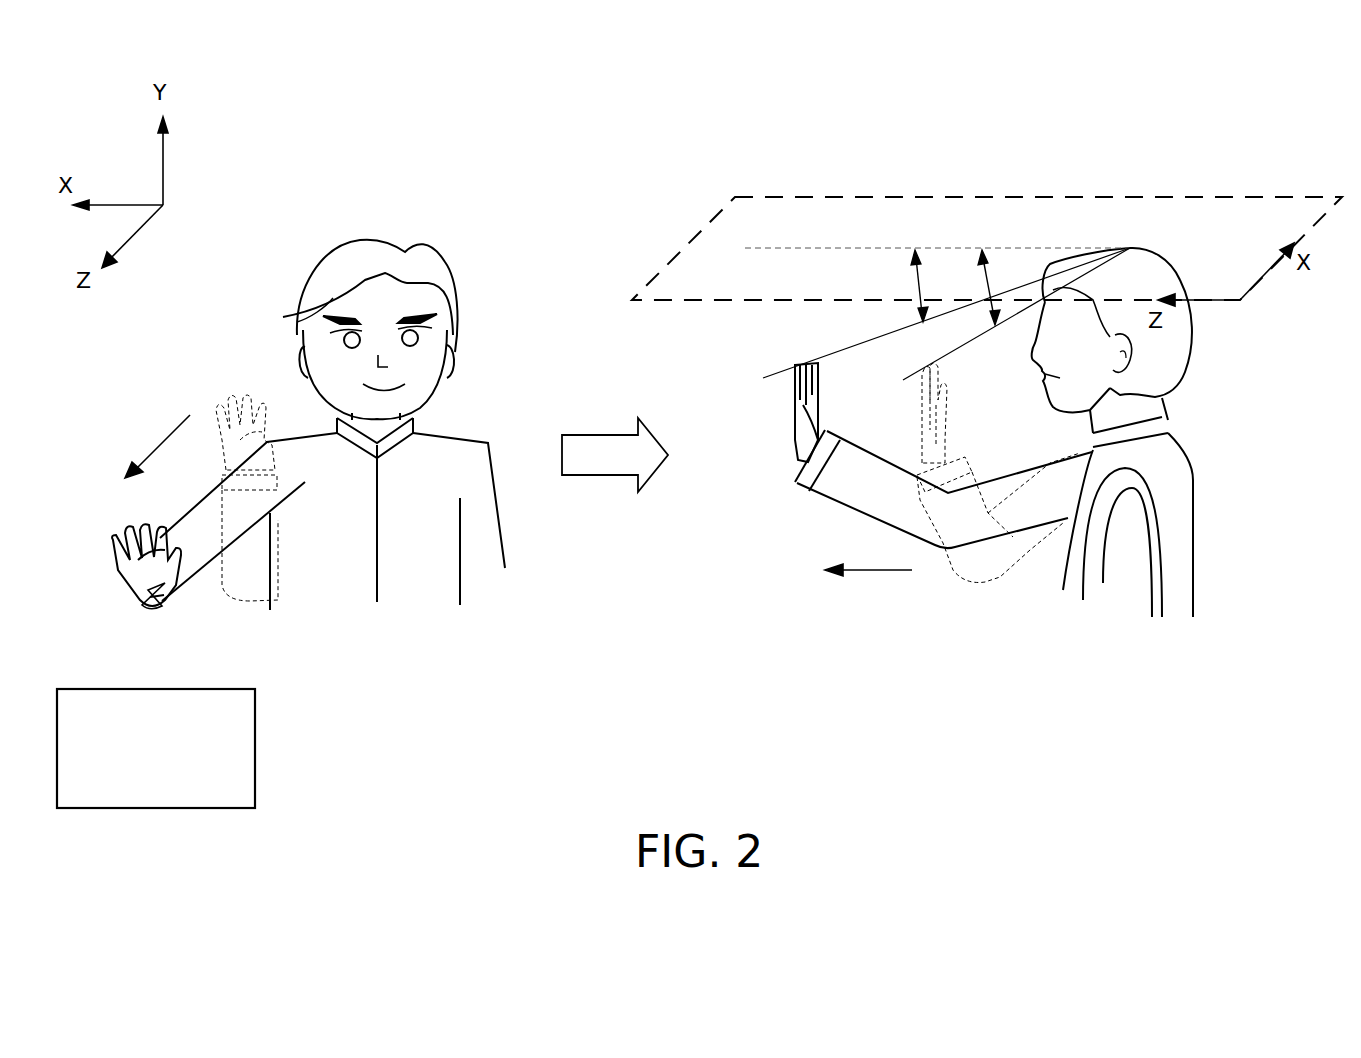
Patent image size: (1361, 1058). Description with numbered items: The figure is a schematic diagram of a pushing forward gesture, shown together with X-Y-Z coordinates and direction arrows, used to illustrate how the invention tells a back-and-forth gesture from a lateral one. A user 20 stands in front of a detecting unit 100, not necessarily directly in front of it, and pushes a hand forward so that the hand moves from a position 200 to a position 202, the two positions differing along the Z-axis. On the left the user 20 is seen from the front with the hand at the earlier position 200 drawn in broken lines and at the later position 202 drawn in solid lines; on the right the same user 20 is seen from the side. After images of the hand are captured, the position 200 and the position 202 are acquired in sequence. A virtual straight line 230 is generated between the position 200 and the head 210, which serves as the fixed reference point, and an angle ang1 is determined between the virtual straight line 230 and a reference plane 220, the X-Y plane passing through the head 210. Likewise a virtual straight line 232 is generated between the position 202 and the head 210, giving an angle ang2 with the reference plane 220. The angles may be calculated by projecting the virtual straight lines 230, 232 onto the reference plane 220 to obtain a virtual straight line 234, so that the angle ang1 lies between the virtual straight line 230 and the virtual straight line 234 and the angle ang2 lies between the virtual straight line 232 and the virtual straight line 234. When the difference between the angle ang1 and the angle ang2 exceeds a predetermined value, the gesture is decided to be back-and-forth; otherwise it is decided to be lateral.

The user 20 is at (448, 206).
The head 210 is at (455, 287).
The position 200 is at (228, 395).
The position 202 is at (115, 530).
The detecting unit 100 is at (258, 748).
The reference plane 220 is at (765, 213).
The virtual straight line 234 is at (848, 248).
The virtual straight line 232 is at (946, 313).
The virtual straight line 230 is at (977, 350).
The angle ang1 is at (985, 285).
The angle ang2 is at (920, 285).